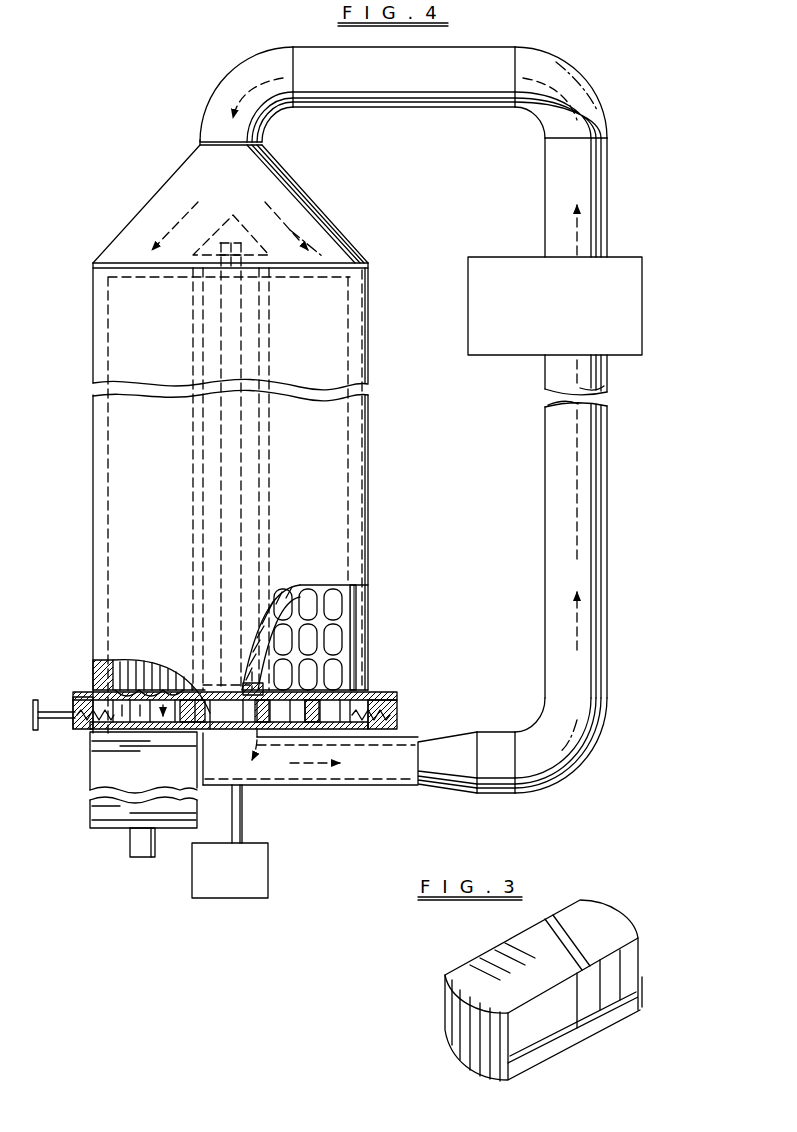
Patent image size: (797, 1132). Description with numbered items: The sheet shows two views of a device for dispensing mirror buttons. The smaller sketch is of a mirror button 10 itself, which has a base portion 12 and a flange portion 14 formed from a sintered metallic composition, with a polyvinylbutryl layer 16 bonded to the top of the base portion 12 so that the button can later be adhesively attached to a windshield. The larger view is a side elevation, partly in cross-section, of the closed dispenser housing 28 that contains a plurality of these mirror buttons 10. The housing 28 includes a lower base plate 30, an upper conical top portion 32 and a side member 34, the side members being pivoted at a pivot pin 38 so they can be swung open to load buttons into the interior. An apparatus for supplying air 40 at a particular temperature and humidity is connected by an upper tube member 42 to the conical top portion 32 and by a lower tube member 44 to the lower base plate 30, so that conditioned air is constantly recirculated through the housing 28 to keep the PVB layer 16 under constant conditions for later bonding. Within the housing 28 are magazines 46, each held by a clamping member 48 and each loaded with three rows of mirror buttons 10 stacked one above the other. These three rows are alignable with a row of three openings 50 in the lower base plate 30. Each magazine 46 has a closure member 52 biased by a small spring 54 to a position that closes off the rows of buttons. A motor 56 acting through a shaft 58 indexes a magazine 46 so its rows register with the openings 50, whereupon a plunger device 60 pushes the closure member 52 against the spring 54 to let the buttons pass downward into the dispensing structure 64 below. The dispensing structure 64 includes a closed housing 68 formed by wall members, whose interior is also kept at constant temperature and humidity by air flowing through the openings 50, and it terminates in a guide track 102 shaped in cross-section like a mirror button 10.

In FIG. 4, the mirror button 10 is at (280, 653).
In FIG. 3, the mirror button 10 is at (577, 966).
In FIG. 3, the base portion 12 is at (590, 1008).
In FIG. 3, the flange portion 14 is at (617, 1005).
In FIG. 3, the polyvinylbutryl layer 16 is at (515, 952).
In FIG. 4, the closed dispenser housing 28 is at (368, 238).
In FIG. 4, the lower base plate 30 is at (334, 730).
In FIG. 4, the conical top portion 32 is at (180, 200).
In FIG. 4, the side member 34 is at (128, 498).
In FIG. 4, the pivot pin 38 is at (92, 441).
In FIG. 4, the apparatus for supplying air 40 is at (652, 307).
In FIG. 4, the upper tube member 42 is at (578, 107).
In FIG. 4, the lower tube member 44 is at (610, 585).
In FIG. 4, the magazine 46 is at (342, 640).
In FIG. 4, the clamping member 48 is at (352, 681).
In FIG. 4, the openings 50 is at (178, 700).
In FIG. 4, the closure member 52 is at (398, 703).
In FIG. 4, the small spring 54 is at (398, 728).
In FIG. 4, the motor 56 is at (236, 889).
In FIG. 4, the shaft 58 is at (233, 823).
In FIG. 4, the plunger device 60 is at (48, 708).
In FIG. 4, the dispensing structure 64 is at (115, 836).
In FIG. 4, the closed housing 68 is at (143, 780).
In FIG. 4, the guide track 102 is at (144, 858).